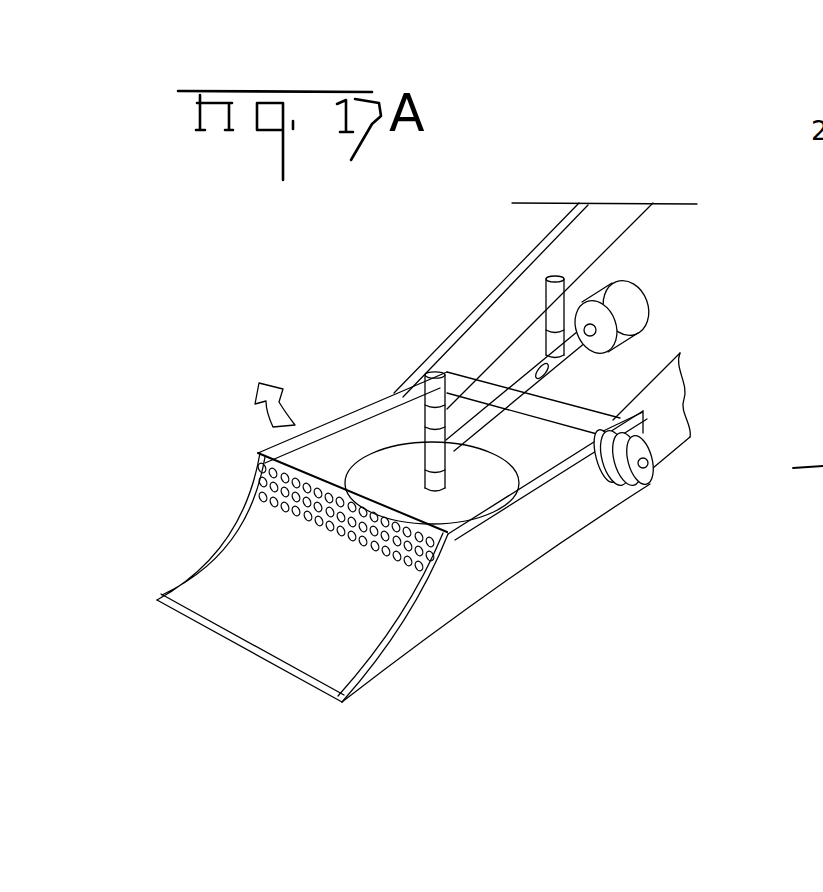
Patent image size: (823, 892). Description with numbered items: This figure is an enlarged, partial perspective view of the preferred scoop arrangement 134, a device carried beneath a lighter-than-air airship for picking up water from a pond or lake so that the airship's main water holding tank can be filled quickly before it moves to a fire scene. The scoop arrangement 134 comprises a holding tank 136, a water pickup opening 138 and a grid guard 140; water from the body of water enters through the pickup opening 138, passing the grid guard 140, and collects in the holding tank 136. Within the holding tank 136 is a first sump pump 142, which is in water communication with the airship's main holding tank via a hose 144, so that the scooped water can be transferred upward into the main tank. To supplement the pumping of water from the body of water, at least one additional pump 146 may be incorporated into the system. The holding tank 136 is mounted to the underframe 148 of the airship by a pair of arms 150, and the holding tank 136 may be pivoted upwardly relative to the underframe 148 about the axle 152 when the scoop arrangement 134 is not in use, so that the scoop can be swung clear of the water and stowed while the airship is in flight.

The scoop arrangement 134 is at (384, 388).
The holding tank 136 is at (448, 590).
The water pickup opening 138 is at (302, 637).
The grid guard 140 is at (266, 490).
The first sump pump 142 is at (508, 455).
The hose 144 is at (546, 303).
The pump 146 is at (615, 292).
The underframe 148 is at (540, 204).
The arms 150 is at (686, 455).
The axle 152 is at (650, 477).